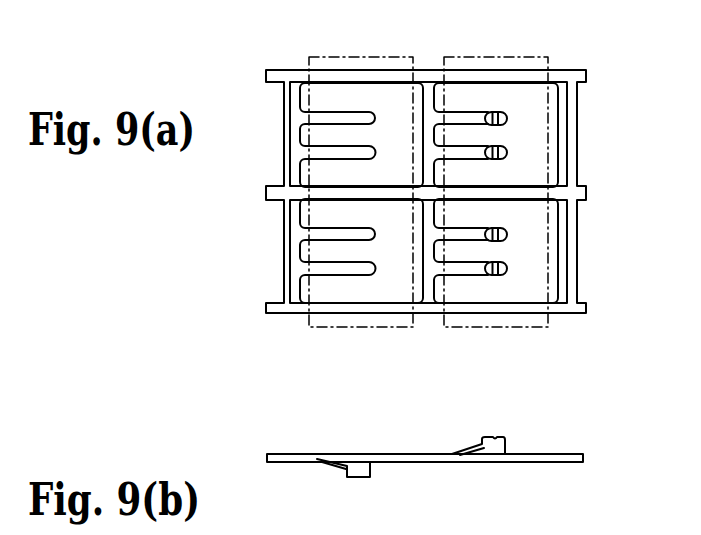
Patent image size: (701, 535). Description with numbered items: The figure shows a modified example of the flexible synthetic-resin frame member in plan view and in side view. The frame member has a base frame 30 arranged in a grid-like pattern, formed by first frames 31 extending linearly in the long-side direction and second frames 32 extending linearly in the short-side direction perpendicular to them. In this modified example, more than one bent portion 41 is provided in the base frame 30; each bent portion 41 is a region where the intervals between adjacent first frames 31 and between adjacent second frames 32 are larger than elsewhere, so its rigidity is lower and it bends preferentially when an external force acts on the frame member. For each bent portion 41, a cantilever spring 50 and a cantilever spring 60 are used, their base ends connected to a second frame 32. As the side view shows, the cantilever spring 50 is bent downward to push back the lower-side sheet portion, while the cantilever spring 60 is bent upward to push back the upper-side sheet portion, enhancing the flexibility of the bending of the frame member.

In FIG. 9A, the base frame 30 is at (426, 214).
In FIG. 9B, the base frame 30 is at (416, 460).
In FIG. 9A, the first frame 31 is at (477, 308).
In FIG. 9A, the second frame 32 is at (429, 195).
In FIG. 9A, the bent portion 41 is at (404, 36).
In FIG. 9A, the cantilever spring 50 is at (329, 117).
In FIG. 9B, the cantilever spring 50 is at (359, 476).
In FIG. 9A, the cantilever spring 60 is at (464, 117).
In FIG. 9B, the cantilever spring 60 is at (496, 437).